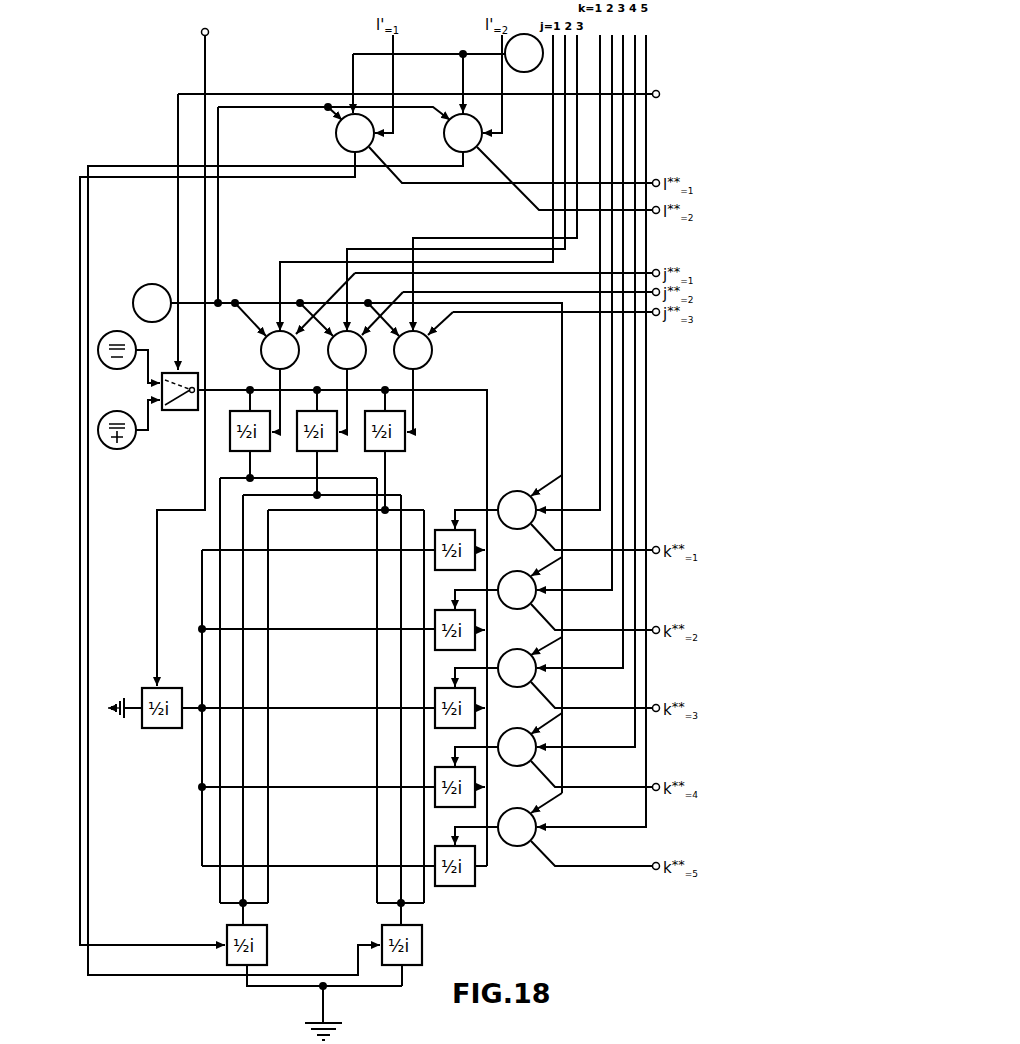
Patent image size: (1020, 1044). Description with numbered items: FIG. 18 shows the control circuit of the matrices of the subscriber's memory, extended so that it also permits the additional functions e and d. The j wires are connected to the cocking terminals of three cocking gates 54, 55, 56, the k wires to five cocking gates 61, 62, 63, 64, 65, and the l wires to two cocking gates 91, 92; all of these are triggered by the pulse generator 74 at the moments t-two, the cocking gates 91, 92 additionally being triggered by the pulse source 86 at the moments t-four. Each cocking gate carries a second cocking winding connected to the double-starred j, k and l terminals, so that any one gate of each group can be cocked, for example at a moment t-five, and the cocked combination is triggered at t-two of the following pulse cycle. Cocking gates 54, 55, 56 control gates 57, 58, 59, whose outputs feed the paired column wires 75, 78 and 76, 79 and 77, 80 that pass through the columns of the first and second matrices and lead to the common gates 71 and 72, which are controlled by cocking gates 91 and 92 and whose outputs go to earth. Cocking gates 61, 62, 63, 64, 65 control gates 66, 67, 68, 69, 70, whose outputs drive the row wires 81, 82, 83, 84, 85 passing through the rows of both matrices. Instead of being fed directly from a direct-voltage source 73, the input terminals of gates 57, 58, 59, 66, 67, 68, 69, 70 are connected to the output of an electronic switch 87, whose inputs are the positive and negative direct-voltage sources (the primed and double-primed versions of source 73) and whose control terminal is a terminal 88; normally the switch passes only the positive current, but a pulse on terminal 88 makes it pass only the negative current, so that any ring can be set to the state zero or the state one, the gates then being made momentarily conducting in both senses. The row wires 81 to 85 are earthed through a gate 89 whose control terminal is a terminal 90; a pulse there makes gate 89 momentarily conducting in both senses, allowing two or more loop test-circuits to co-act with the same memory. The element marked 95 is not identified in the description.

The cocking gate 54 is at (264, 350).
The cocking gate 55 is at (331, 350).
The cocking gate 56 is at (398, 350).
The gate 57 is at (236, 456).
The gate 58 is at (304, 456).
The gate 59 is at (372, 456).
The cocking gate 61 is at (499, 500).
The cocking gate 62 is at (499, 580).
The cocking gate 63 is at (499, 658).
The cocking gate 64 is at (499, 737).
The cocking gate 65 is at (499, 817).
The gate 66 is at (438, 540).
The gate 67 is at (438, 620).
The gate 68 is at (438, 698).
The gate 69 is at (438, 777).
The gate 70 is at (438, 856).
The gate 71 is at (268, 948).
The gate 72 is at (423, 948).
The direct-voltage source 73 is at (102, 336).
The pulse generator 74 is at (150, 286).
The wire 75 is at (220, 806).
The wire 76 is at (243, 824).
The wire 77 is at (268, 845).
The wire 78 is at (377, 803).
The wire 79 is at (401, 826).
The wire 80 is at (424, 855).
The wire 81 is at (332, 549).
The wire 82 is at (332, 628).
The wire 83 is at (332, 707).
The wire 84 is at (332, 786).
The wire 85 is at (320, 863).
The pulse source 86 is at (522, 70).
The electronic switch 87 is at (180, 412).
The terminal 88 is at (431, 227).
The gate 89 is at (162, 730).
The terminal 90 is at (196, 355).
The cocking gate 91 is at (336, 137).
The cocking gate 92 is at (444, 137).
The conductor 95 is at (157, 568).